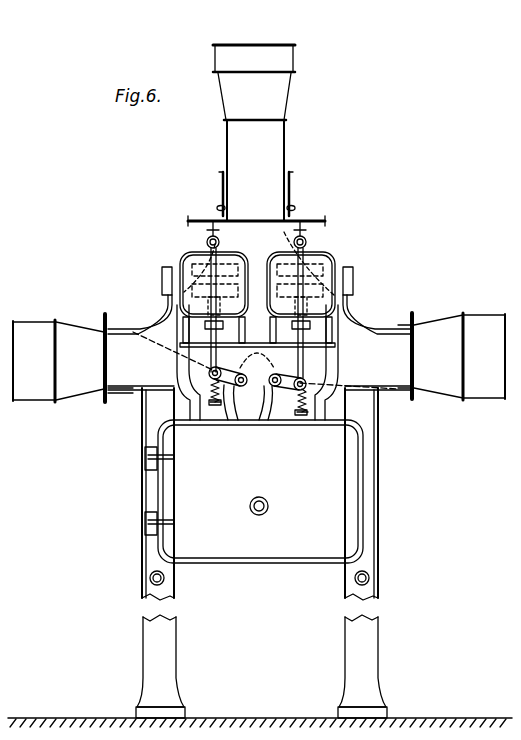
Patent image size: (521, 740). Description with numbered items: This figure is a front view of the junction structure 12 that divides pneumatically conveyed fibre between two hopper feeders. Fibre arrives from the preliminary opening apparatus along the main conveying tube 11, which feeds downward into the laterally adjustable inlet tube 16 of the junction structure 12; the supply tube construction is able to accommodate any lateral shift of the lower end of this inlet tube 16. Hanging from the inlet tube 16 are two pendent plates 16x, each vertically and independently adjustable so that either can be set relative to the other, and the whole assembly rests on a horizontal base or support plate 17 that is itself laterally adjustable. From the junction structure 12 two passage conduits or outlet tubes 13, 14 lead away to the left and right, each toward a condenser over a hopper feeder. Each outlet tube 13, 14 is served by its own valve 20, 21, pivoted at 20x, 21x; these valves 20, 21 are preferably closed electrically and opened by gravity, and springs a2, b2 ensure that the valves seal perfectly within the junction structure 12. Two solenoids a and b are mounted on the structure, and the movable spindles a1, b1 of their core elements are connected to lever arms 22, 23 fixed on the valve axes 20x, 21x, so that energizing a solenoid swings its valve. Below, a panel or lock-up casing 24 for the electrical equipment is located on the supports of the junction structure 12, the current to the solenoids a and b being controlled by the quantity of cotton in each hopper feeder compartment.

The main conveying tube 11 is at (284, 42).
The inlet tube 16 is at (255, 170).
The pendent plates 16x is at (319, 181).
The horizontal base or support plate 17 is at (318, 217).
The solenoid a is at (197, 258).
The solenoid b is at (320, 257).
The junction structure 12 is at (260, 308).
The outlet tube 13 is at (73, 358).
The outlet tube 14 is at (451, 356).
The valve 20 is at (150, 343).
The valve 21 is at (364, 377).
The movable spindle a1 is at (207, 361).
The movable spindle b1 is at (310, 358).
The spring a2 is at (212, 393).
The spring b2 is at (310, 404).
The lever arm 22 is at (218, 407).
The valve pivot axis 20x is at (240, 388).
The valve pivot axis 21x is at (274, 392).
The lever arm 23 is at (290, 398).
The panel or lock-up casing 24 is at (254, 491).